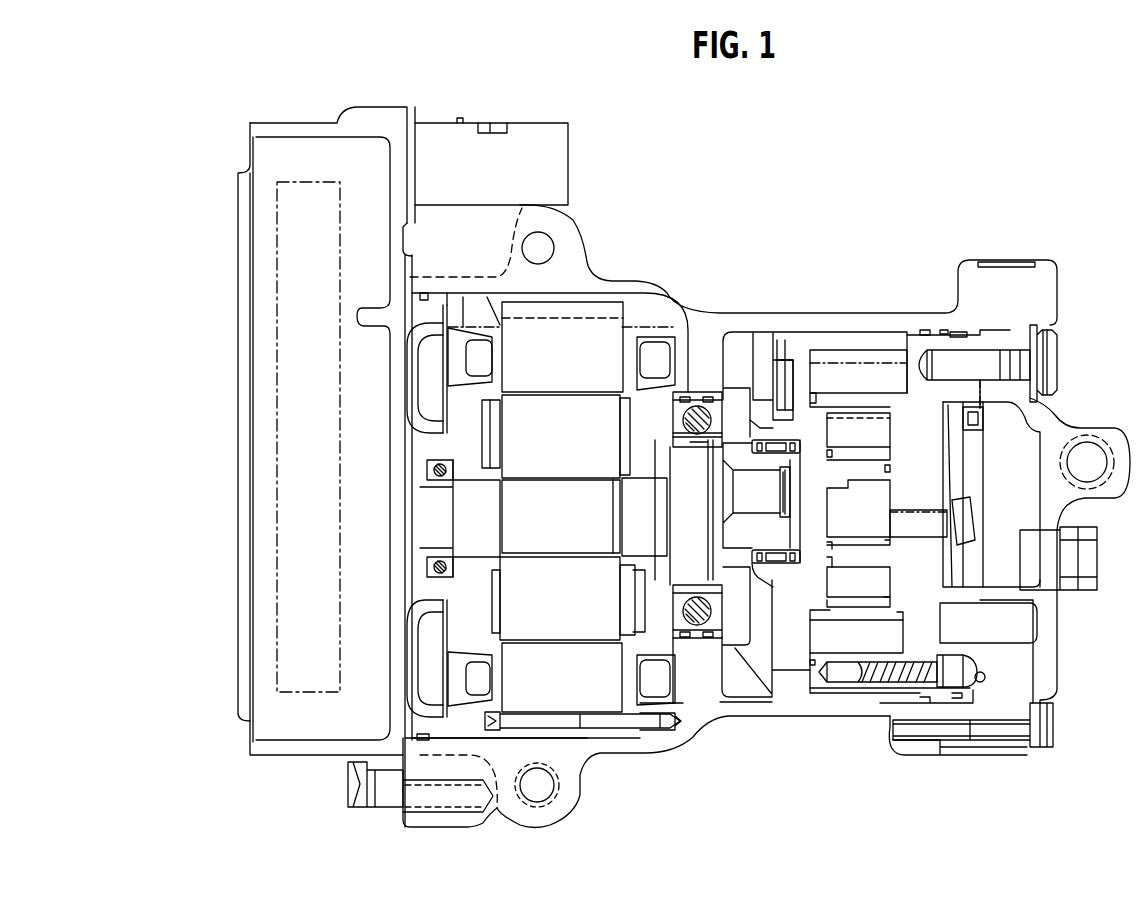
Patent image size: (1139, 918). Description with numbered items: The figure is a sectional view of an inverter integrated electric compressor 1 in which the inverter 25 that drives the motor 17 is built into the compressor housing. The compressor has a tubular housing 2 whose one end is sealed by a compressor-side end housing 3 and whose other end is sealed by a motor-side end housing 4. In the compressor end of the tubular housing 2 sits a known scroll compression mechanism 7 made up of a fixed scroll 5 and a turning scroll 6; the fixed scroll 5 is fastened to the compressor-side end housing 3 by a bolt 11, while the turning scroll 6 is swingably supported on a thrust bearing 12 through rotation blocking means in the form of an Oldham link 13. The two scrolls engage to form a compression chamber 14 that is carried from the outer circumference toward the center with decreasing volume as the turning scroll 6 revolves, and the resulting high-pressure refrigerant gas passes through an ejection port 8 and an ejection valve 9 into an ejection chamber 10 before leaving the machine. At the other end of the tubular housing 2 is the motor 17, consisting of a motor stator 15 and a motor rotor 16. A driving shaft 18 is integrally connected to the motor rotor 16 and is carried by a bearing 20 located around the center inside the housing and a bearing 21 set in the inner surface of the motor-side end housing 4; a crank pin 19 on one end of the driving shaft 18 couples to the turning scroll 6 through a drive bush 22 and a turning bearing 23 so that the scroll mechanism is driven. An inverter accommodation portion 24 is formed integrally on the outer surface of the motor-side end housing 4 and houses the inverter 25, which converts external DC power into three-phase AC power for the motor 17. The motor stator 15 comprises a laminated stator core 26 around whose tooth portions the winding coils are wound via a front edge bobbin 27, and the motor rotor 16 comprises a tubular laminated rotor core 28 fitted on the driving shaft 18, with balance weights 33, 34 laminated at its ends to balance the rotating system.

The electric compressor 1 is at (738, 238).
The tubular housing 2 is at (660, 275).
The compressor-side end housing 3 is at (1048, 643).
The motor-side end housing 4 is at (405, 668).
The fixed scroll 5 is at (920, 625).
The turning scroll 6 is at (795, 660).
The scroll compression mechanism 7 is at (855, 340).
The ejection port 8 is at (913, 508).
The ejection valve 9 is at (945, 525).
The ejection chamber 10 is at (1000, 432).
The bolt 11 is at (1012, 360).
The thrust bearing 12 is at (752, 690).
The Oldham link 13 is at (783, 345).
The compression chamber 14 is at (875, 575).
The motor stator 15 is at (532, 630).
The motor rotor 16 is at (563, 485).
The motor 17 is at (597, 285).
The driving shaft 18 is at (593, 478).
The crank pin 19 is at (740, 490).
The bearing 20 is at (688, 420).
The bearing 21 is at (448, 575).
The drive bush 22 is at (760, 530).
The turning bearing 23 is at (775, 560).
The inverter accommodation portion 24 is at (305, 140).
The inverter 25 is at (268, 440).
The stator core 26 is at (600, 712).
The front edge bobbin 27 is at (630, 668).
The rotor core 28 is at (560, 390).
The balance weight 33 is at (490, 443).
The balance weight 34 is at (630, 605).